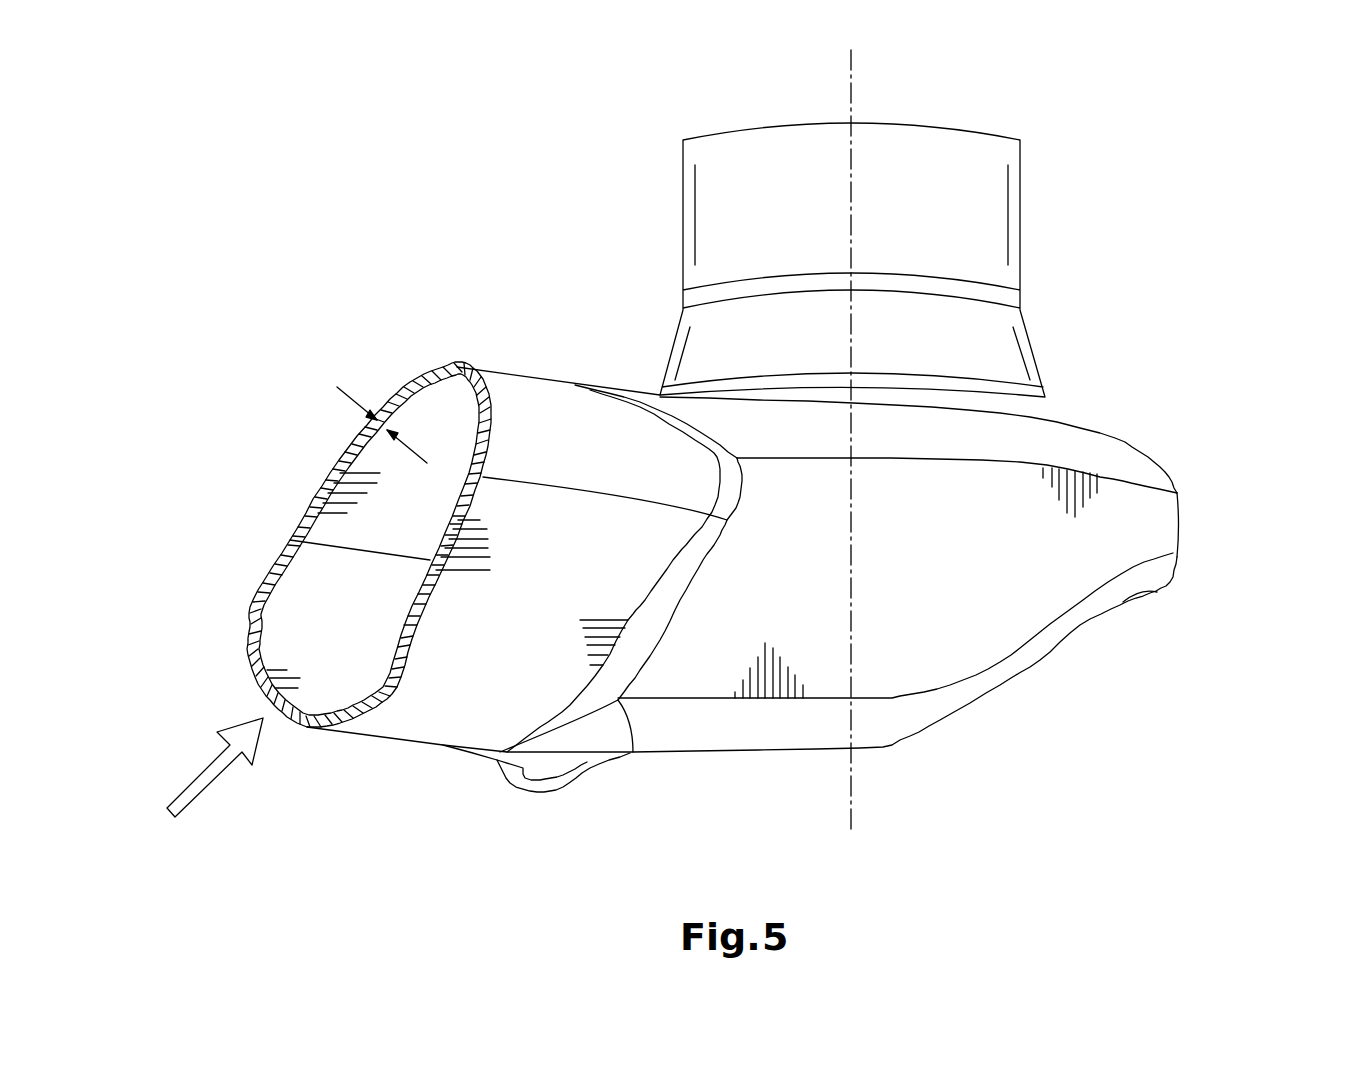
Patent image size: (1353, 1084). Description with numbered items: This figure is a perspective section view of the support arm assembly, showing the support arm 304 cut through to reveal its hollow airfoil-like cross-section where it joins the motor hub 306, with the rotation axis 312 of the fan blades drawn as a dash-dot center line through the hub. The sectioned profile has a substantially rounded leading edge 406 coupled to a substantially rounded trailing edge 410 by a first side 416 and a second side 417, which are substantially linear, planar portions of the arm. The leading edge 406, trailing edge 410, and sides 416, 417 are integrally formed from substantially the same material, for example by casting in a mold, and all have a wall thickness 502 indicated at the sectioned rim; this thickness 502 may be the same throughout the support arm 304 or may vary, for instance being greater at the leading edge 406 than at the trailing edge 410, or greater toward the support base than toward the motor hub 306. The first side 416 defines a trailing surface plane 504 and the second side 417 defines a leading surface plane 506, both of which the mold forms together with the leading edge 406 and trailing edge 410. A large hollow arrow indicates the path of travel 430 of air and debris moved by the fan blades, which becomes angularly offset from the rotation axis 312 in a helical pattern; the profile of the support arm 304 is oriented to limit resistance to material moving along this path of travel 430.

The support arm 304 is at (612, 575).
The motor hub 306 is at (1183, 523).
The rotation axis 312 is at (851, 92).
The leading edge 406 is at (306, 729).
The trailing edge 410 is at (455, 366).
The first side 416 is at (287, 522).
The second side 417 is at (415, 625).
The path of travel 430 is at (193, 772).
The thickness 502 is at (358, 395).
The trailing surface plane 504 is at (320, 474).
The leading surface plane 506 is at (512, 663).